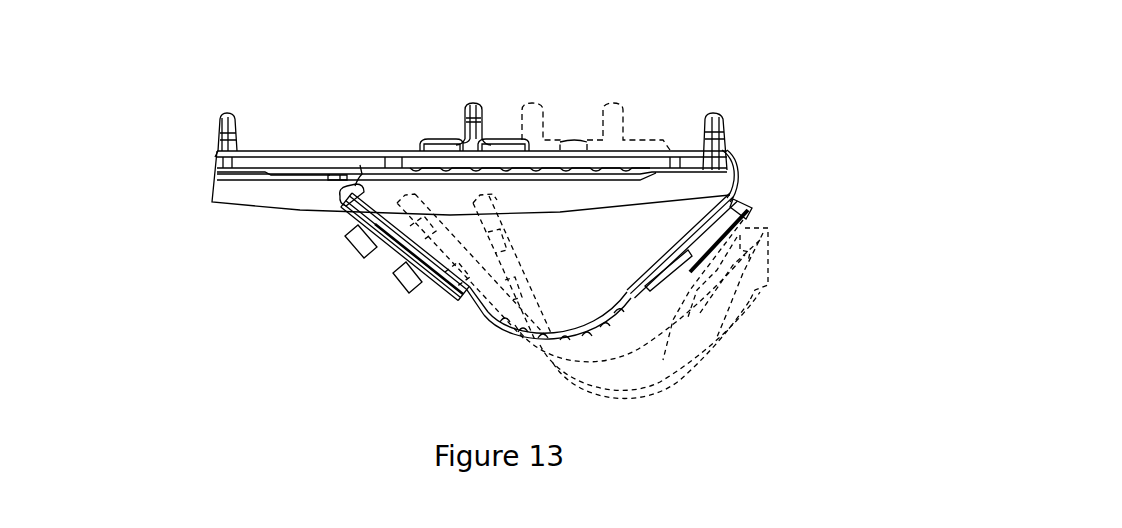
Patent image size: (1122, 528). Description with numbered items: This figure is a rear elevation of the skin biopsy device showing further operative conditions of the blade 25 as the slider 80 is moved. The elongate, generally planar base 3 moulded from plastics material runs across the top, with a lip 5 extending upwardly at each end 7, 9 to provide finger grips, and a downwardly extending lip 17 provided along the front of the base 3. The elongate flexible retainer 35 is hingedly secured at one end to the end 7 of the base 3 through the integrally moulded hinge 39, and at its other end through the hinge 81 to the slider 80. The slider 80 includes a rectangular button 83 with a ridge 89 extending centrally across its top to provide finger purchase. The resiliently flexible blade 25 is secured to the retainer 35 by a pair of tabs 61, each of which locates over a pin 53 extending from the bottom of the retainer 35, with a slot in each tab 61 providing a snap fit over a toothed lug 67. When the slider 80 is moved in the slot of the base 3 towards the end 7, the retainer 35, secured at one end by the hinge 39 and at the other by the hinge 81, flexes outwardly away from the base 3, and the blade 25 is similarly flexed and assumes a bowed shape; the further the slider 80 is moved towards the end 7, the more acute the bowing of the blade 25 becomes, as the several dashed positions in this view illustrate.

The base 3 is at (307, 150).
The lip 5 is at (224, 112).
The end 7 is at (770, 171).
The end 9 is at (192, 162).
The downwardly extending lip 17 is at (273, 190).
The blade 25 is at (480, 328).
The retainer 35 is at (650, 272).
The hinge 39 is at (734, 172).
The pin 53 is at (411, 288).
The tab 61 is at (392, 247).
The toothed lug 67 is at (357, 244).
The slider 80 is at (508, 101).
The hinge 81 is at (350, 188).
The button 83 is at (440, 137).
The ridge 89 is at (473, 102).